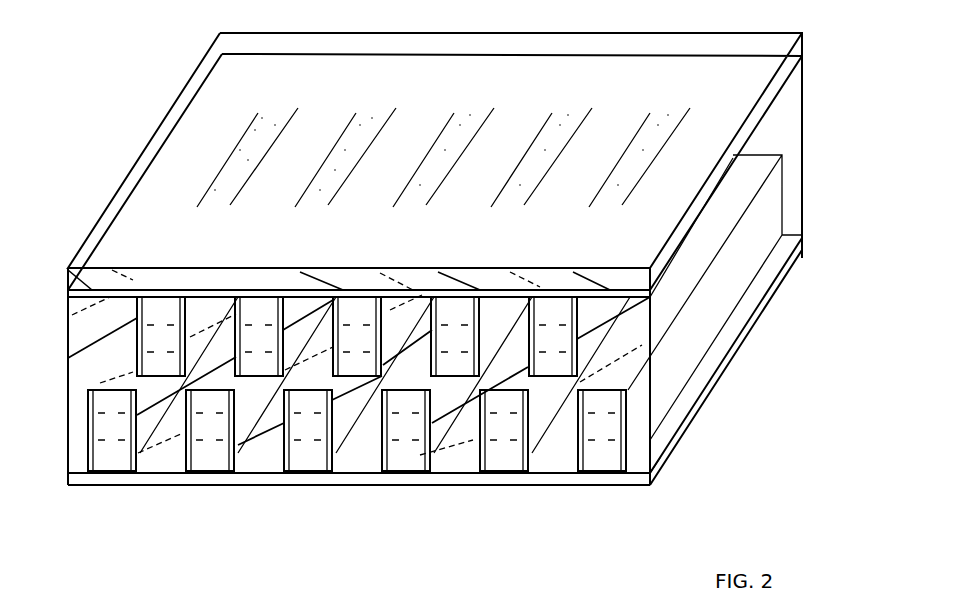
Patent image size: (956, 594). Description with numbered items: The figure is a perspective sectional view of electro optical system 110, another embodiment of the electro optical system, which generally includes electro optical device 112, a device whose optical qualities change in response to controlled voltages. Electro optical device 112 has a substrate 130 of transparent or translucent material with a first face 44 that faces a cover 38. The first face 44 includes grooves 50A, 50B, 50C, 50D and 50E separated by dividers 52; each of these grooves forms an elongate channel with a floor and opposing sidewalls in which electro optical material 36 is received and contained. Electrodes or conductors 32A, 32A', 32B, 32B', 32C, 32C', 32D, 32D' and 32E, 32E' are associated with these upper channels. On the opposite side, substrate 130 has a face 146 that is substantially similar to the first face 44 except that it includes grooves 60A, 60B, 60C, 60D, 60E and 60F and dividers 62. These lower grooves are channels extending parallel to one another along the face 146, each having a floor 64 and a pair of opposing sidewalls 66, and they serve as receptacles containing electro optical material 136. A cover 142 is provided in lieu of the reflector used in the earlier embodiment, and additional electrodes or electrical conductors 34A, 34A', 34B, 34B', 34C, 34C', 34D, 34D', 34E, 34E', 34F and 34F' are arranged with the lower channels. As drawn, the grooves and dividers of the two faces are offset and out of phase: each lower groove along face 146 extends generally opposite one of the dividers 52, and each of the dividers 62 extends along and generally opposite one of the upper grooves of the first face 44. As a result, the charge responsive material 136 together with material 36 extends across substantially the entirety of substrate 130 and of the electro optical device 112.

The dividers 52 is at (233, 200).
The groove 50A is at (161, 296).
The groove 50B is at (259, 296).
The groove 50C is at (360, 296).
The groove 50D is at (455, 296).
The groove 50E is at (555, 296).
The conductor 32A is at (151, 299).
The conductor 32A' is at (199, 299).
The conductor 32B is at (255, 306).
The conductor 32B' is at (302, 306).
The conductor 32C is at (357, 299).
The conductor 32C' is at (406, 299).
The conductor 32D is at (455, 306).
The conductor 32D' is at (502, 306).
The conductor 32E is at (553, 299).
The conductor 32E' is at (612, 299).
The cover 38 is at (84, 289).
The first face 44 is at (623, 290).
The electro optical material 36 is at (155, 352).
The substrate 130 is at (74, 335).
The electro optical material 136 is at (103, 423).
The cover 142 is at (90, 438).
The floor 64 is at (405, 388).
The sidewall 66 is at (280, 436).
The electro optical device 112 is at (727, 379).
The electro optical system 110 is at (712, 457).
The face 146 is at (640, 482).
The conductor 34A is at (88, 455).
The conductor 34A' is at (135, 455).
The conductor 34B is at (198, 458).
The conductor 34B' is at (237, 458).
The conductor 34C is at (301, 455).
The conductor 34C' is at (342, 455).
The conductor 34D is at (397, 460).
The conductor 34D' is at (441, 460).
The conductor 34E is at (497, 456).
The conductor 34E' is at (540, 456).
The conductor 34F is at (595, 460).
The conductor 34F' is at (640, 460).
The groove 60A is at (112, 474).
The groove 60B is at (211, 474).
The groove 60C is at (309, 474).
The groove 60D is at (407, 474).
The groove 60E is at (505, 474).
The groove 60F is at (603, 474).
The dividers 62 is at (168, 462).